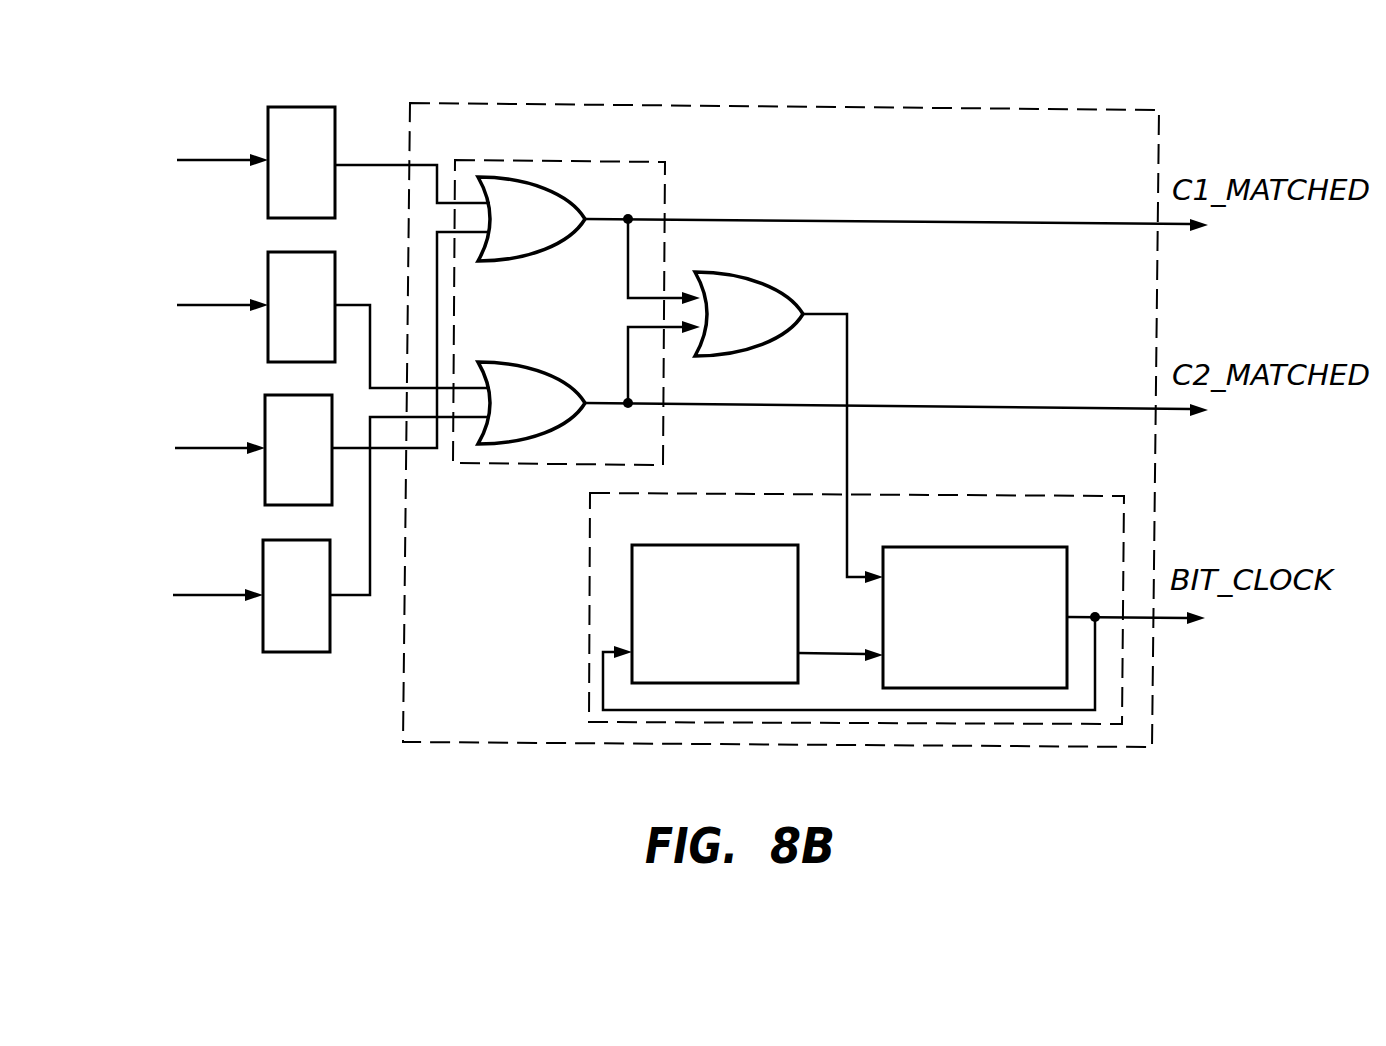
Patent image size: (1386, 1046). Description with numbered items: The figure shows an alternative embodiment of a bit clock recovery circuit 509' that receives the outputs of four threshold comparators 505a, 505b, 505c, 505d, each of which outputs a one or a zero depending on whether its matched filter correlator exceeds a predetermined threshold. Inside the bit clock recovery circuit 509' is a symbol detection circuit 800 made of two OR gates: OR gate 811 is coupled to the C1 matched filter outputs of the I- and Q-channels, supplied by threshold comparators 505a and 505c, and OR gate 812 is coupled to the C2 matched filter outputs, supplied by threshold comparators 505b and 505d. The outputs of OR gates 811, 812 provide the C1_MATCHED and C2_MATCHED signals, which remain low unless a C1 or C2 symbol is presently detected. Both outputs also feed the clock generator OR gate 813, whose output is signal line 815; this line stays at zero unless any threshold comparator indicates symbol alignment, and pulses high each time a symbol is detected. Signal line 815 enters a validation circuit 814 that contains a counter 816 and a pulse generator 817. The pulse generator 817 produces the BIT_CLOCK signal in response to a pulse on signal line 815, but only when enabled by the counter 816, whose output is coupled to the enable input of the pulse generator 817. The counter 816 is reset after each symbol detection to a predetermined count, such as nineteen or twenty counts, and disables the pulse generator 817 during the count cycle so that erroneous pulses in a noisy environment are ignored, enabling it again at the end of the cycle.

The threshold comparator 505a is at (268, 204).
The threshold comparator 505b is at (268, 350).
The threshold comparator 505c is at (265, 492).
The threshold comparator 505d is at (263, 637).
The bit clock recovery circuit 509' is at (781, 388).
The symbol detection circuit 800 is at (665, 190).
The OR gate 811 is at (516, 261).
The OR gate 812 is at (565, 372).
The clock generator OR gate 813 is at (762, 274).
The validation circuit 814 is at (587, 545).
The signal line 815 is at (847, 450).
The counter 816 is at (660, 545).
The pulse generator 817 is at (912, 547).